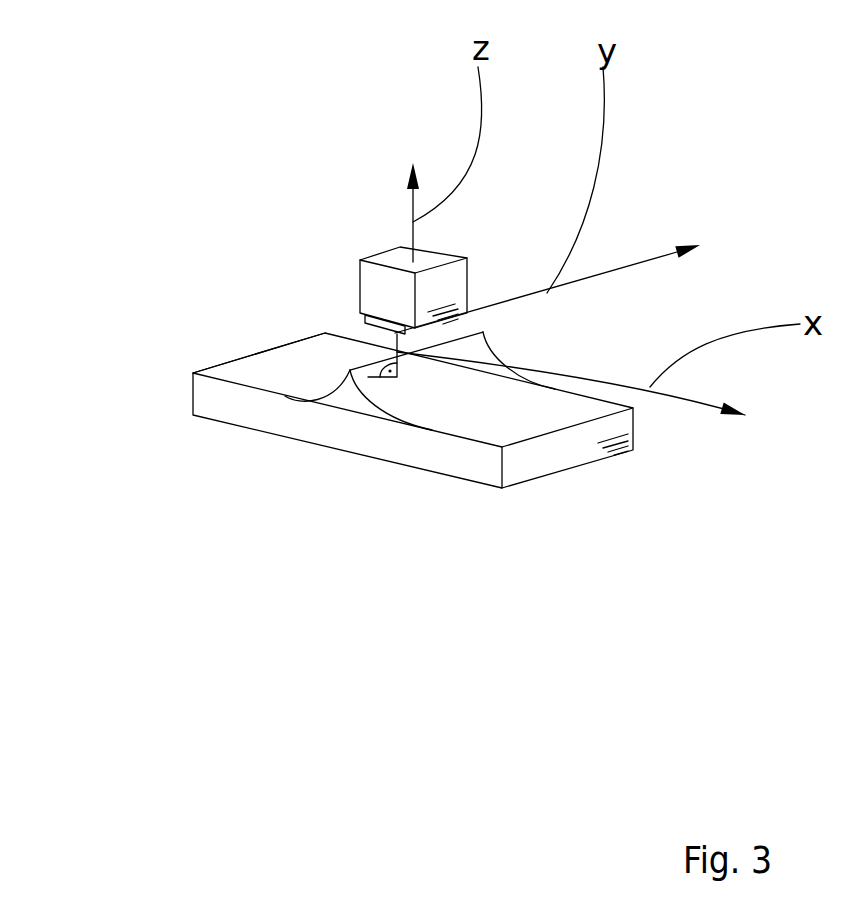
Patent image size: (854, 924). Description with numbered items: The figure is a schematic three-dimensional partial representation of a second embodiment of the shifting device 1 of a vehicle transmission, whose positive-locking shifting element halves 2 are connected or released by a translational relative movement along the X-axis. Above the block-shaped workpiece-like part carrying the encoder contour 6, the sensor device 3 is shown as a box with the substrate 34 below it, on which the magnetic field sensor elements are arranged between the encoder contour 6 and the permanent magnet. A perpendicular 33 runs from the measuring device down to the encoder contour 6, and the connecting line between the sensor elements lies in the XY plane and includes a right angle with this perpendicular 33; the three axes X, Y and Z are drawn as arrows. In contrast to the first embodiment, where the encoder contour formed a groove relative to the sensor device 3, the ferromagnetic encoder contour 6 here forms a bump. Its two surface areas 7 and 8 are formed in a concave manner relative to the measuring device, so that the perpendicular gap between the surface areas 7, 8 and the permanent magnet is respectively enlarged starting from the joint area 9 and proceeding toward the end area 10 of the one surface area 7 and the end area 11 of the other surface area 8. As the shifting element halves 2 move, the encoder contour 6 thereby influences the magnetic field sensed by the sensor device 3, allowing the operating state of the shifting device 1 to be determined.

The shifting device 1 is at (293, 181).
The shifting element half 2 is at (477, 460).
The sensor device 3 is at (477, 243).
The encoder contour 6 is at (355, 405).
The surface area 7 is at (320, 390).
The surface area 8 is at (440, 380).
The joint area 9 is at (397, 352).
The end area 10 is at (290, 398).
The end area 11 is at (483, 403).
The perpendicular 33 is at (400, 334).
The substrate 34 is at (360, 313).